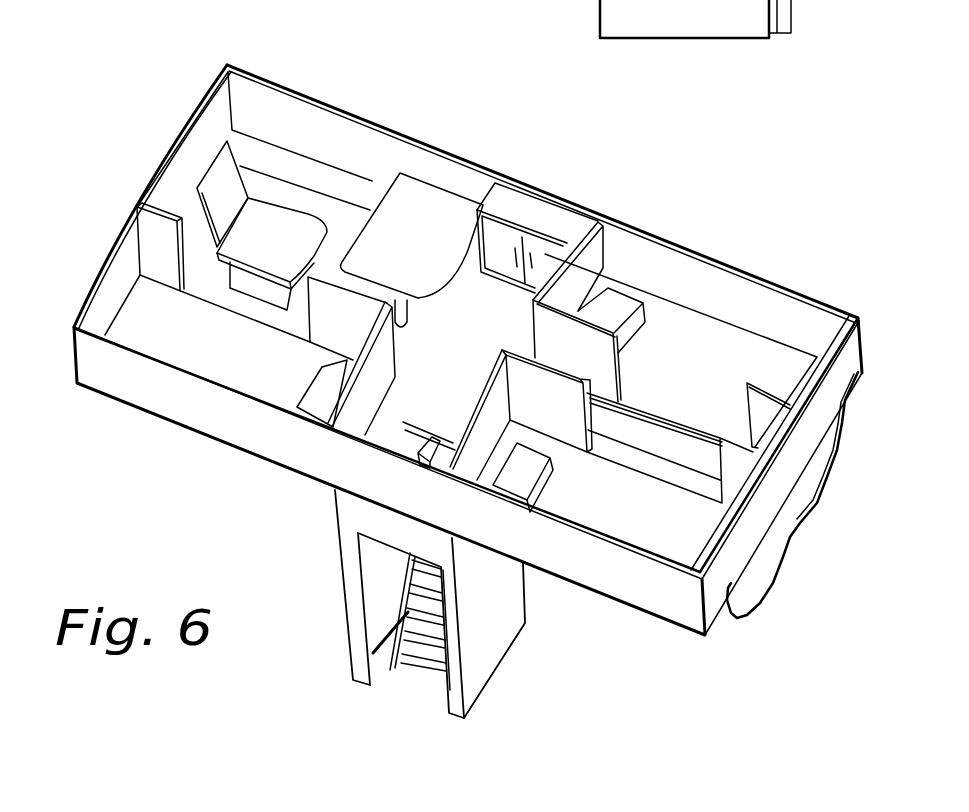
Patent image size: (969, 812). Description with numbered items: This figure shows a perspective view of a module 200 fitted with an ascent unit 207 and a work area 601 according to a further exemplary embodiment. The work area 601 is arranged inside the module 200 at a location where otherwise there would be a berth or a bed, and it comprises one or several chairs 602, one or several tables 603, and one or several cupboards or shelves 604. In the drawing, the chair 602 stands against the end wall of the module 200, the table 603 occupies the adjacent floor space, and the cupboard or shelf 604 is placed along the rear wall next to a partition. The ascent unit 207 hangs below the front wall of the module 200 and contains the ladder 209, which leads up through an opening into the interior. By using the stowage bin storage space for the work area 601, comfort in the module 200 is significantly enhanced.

The module 200 is at (157, 64).
The work area 601 is at (318, 126).
The chair 602 is at (217, 188).
The table 603 is at (425, 197).
The cupboard or shelf 604 is at (520, 202).
The ascent unit 207 is at (356, 582).
The ladder 209 is at (432, 660).